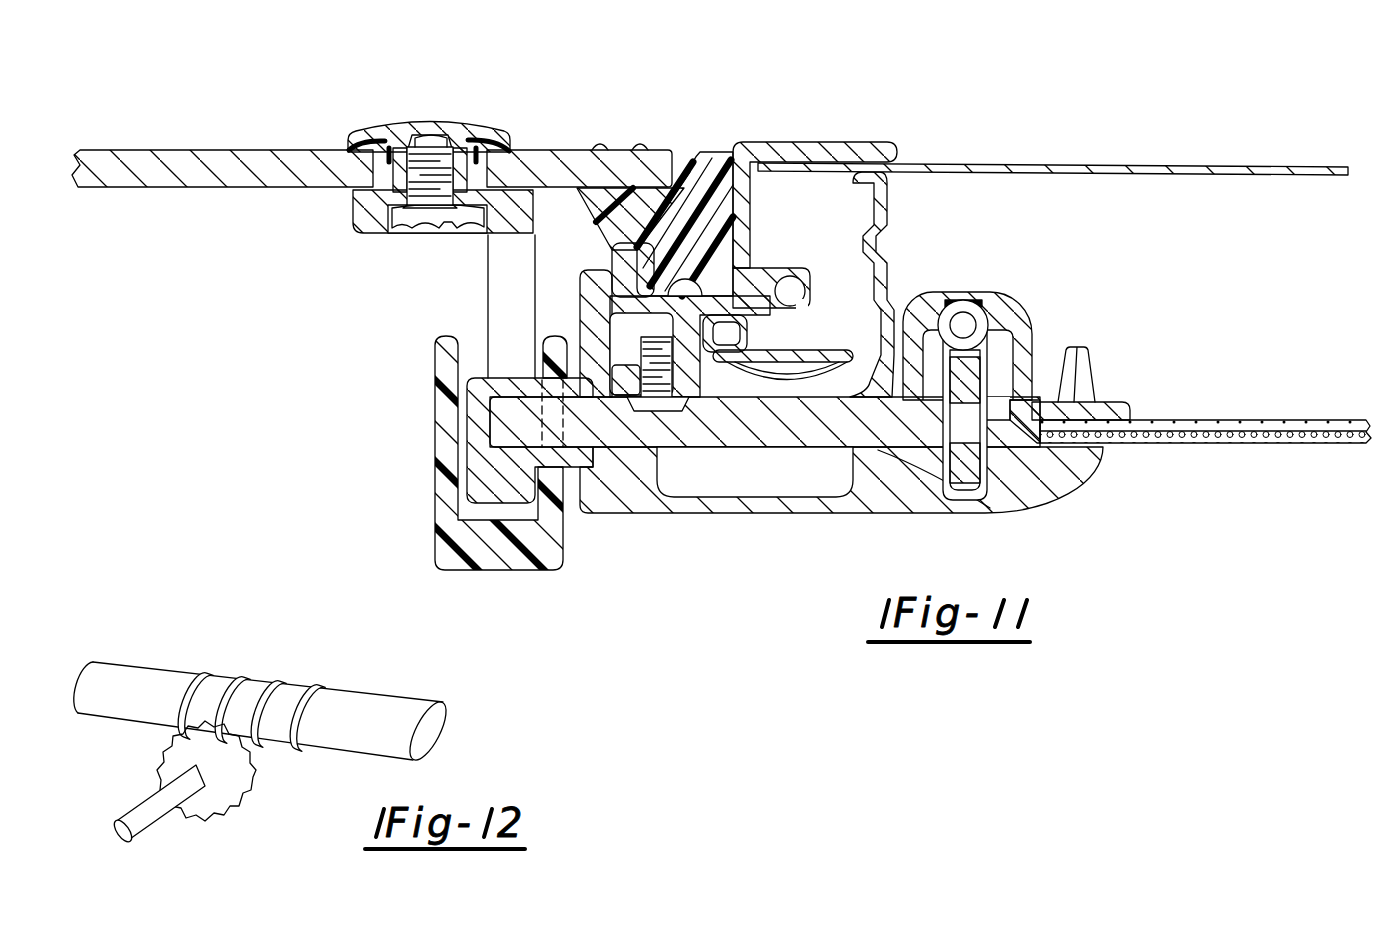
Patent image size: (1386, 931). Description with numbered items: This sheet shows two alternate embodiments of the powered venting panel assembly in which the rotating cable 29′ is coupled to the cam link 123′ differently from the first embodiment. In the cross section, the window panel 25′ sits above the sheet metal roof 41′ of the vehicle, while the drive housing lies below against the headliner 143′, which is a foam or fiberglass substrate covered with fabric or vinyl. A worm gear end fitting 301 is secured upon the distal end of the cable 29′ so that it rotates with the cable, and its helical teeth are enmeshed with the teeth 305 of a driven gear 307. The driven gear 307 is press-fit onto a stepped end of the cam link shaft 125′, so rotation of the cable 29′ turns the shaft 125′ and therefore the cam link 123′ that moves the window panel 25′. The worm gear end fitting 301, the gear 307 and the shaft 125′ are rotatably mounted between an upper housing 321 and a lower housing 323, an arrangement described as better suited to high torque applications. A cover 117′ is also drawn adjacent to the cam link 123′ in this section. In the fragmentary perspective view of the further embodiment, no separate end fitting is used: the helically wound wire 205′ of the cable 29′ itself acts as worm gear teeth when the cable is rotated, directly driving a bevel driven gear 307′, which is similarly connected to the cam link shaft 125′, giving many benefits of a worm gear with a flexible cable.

In FIG. 11, the window panel 25′ is at (218, 150).
In FIG. 11, the sheet metal roof 41′ is at (1126, 167).
In FIG. 11, the upper housing 321 is at (930, 306).
In FIG. 11, the cable 29′ is at (965, 322).
In FIG. 12, the cable 29′ is at (287, 697).
In FIG. 11, the worm gear end fitting 301 is at (992, 330).
In FIG. 11, the headliner 143′ is at (1318, 443).
In FIG. 11, the driven gear 307 is at (972, 458).
In FIG. 11, the teeth 305 is at (972, 490).
In FIG. 11, the lower housing 323 is at (870, 495).
In FIG. 11, the cam link shaft 125′ is at (843, 433).
In FIG. 12, the cam link shaft 125′ is at (155, 813).
In FIG. 11, the cam link 123′ is at (502, 474).
In FIG. 11, the cover 117′ is at (452, 522).
In FIG. 12, the helically wound wire 205′ is at (267, 693).
In FIG. 12, the bevel driven gear 307′ is at (247, 758).